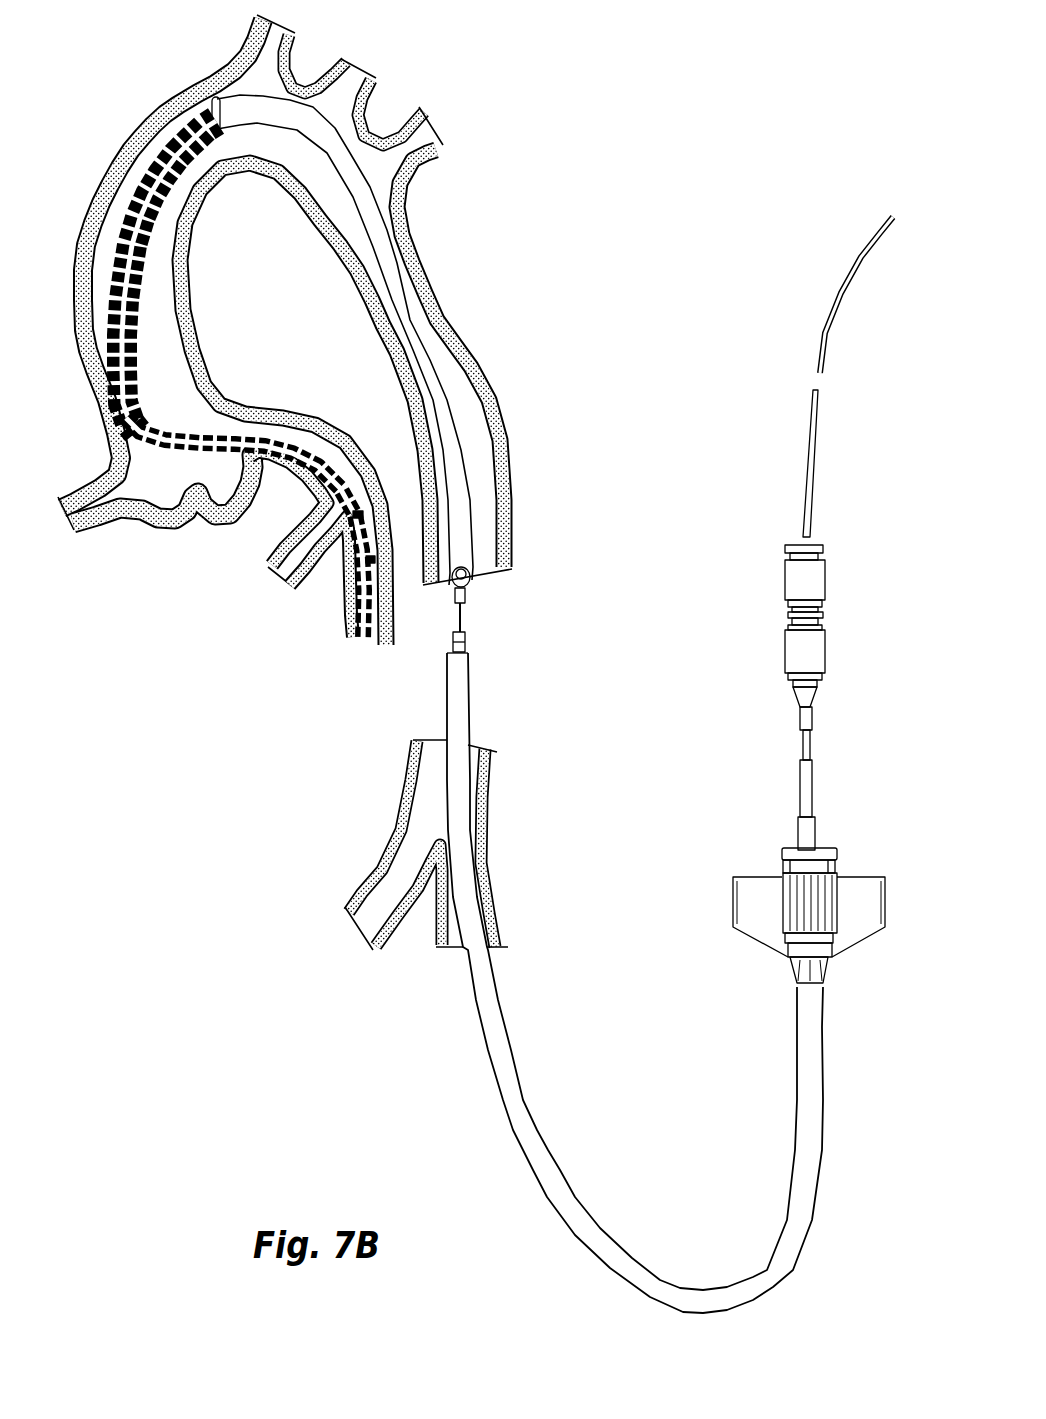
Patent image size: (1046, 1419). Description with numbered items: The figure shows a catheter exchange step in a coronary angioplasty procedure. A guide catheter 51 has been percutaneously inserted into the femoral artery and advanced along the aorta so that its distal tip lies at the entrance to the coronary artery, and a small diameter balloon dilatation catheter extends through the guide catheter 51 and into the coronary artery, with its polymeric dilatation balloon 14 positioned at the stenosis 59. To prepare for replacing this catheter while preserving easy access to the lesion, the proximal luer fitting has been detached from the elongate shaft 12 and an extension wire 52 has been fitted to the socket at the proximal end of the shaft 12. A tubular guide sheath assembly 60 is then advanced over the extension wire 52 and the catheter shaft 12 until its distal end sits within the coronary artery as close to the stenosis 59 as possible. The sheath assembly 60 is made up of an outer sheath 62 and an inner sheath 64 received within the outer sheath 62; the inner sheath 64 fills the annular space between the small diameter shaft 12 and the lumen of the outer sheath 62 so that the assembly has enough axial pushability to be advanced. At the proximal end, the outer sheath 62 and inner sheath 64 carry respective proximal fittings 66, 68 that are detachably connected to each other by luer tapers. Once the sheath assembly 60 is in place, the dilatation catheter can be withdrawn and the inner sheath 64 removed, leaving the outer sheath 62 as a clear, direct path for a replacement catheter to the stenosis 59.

The elongate shaft 12 is at (459, 610).
The polymeric dilatation balloon 14 is at (343, 620).
The guide catheter 51 is at (503, 1052).
The extension wire 52 is at (808, 443).
The stenosis 59 is at (347, 586).
The tubular guide sheath assembly 60 is at (798, 808).
The outer sheath 62 is at (357, 515).
The inner sheath 64 is at (370, 560).
The proximal fitting 66 is at (790, 648).
The proximal fitting 68 is at (792, 583).